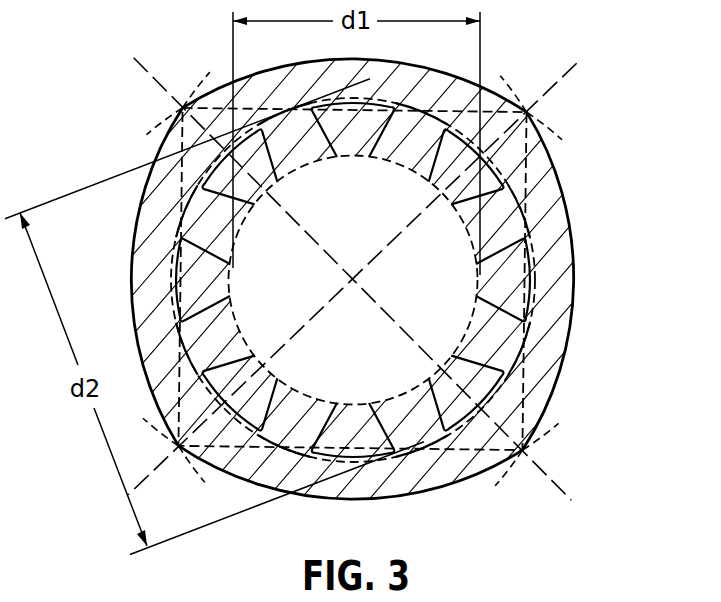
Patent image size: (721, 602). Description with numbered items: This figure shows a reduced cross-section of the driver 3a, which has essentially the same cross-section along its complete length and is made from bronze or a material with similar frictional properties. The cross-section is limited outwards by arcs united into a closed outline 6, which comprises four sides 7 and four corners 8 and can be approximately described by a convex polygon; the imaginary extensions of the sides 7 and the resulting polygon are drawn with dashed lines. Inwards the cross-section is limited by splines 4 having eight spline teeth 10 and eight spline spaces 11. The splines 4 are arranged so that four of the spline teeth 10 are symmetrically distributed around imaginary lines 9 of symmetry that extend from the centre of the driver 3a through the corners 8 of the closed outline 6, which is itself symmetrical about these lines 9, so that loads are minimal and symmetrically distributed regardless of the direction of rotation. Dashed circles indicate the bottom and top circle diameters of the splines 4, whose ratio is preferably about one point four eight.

The driver 3a is at (604, 70).
The splines 4 is at (422, 458).
The closed figure 6 is at (573, 232).
The sides 7 is at (358, 60).
The corners 8 is at (527, 112).
The lines of symmetry 9 is at (528, 112).
The spline teeth 10 is at (441, 368).
The spline spaces 11 is at (408, 418).